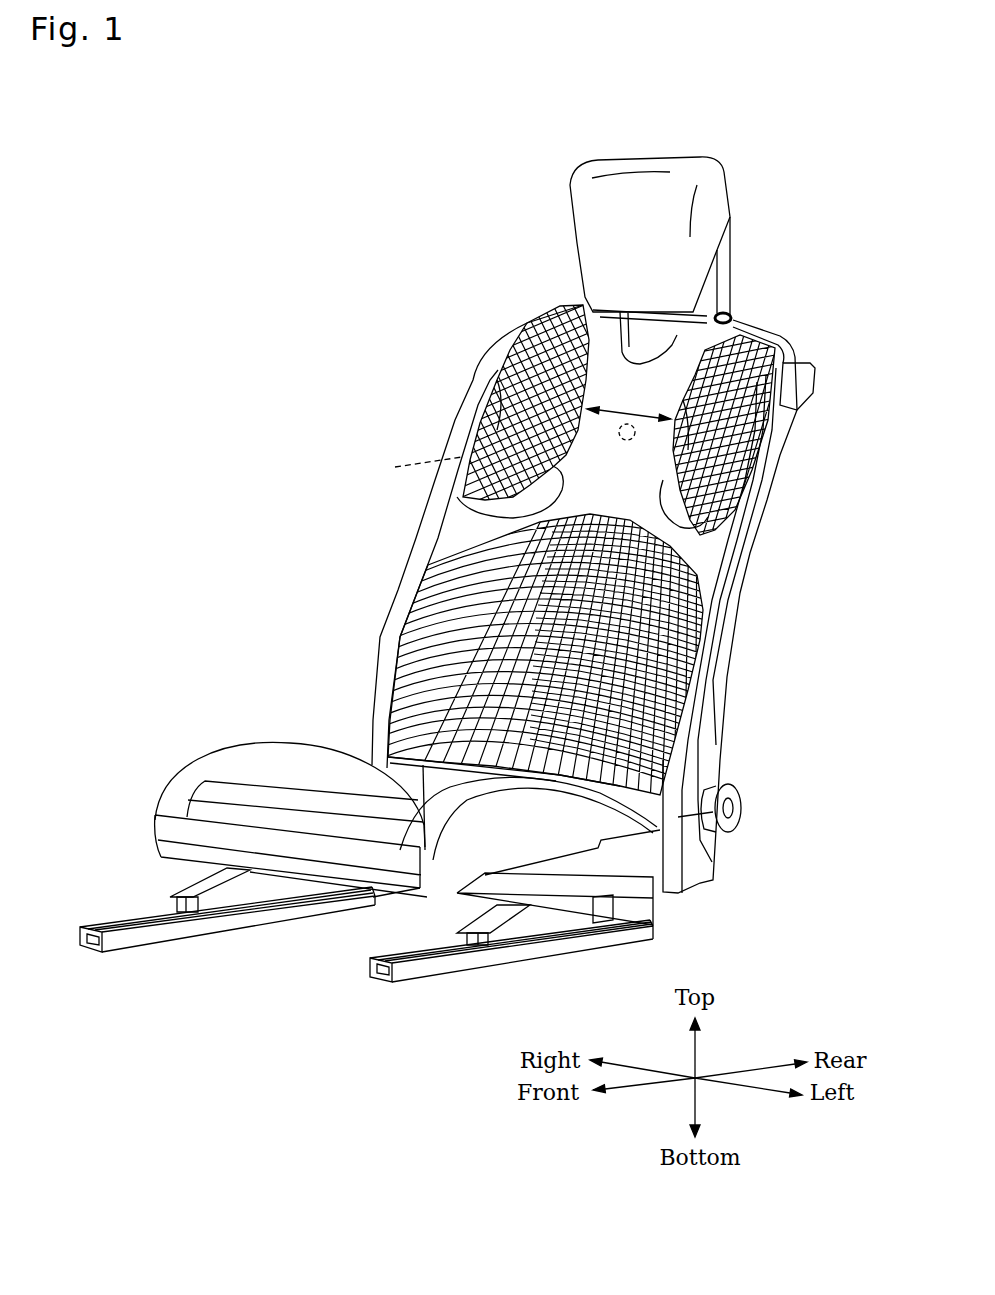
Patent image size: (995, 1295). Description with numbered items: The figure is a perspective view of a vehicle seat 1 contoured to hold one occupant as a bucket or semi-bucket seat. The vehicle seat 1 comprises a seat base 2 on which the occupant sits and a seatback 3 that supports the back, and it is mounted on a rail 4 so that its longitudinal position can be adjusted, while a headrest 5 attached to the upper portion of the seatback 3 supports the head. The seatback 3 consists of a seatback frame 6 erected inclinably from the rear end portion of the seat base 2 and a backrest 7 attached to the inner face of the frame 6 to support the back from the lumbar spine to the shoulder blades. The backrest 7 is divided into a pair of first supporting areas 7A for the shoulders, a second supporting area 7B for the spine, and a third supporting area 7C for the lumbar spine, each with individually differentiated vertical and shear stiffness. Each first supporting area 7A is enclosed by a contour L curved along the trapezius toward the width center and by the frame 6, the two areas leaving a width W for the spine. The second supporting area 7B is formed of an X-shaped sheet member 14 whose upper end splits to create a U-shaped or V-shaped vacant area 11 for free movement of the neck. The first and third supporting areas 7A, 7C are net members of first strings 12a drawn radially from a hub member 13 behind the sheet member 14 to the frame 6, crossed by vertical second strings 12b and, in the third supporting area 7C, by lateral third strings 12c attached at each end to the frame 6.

The vehicle seat 1 is at (251, 548).
The seat base 2 is at (270, 792).
The seatback 3 is at (817, 481).
The rail 4 is at (149, 938).
The headrest 5 is at (660, 162).
The seatback frame 6 is at (816, 384).
The backrest 7 is at (690, 600).
The first supporting area 7A is at (512, 395).
The second supporting area 7B is at (602, 490).
The third supporting area 7C is at (700, 676).
The vacant area 11 is at (593, 307).
The first strings 12a is at (507, 433).
The second strings 12b is at (513, 357).
The third strings 12c is at (463, 675).
The hub member 13 is at (627, 422).
The sheet member 14 is at (673, 370).
The width W is at (629, 406).
The contour L is at (460, 512).